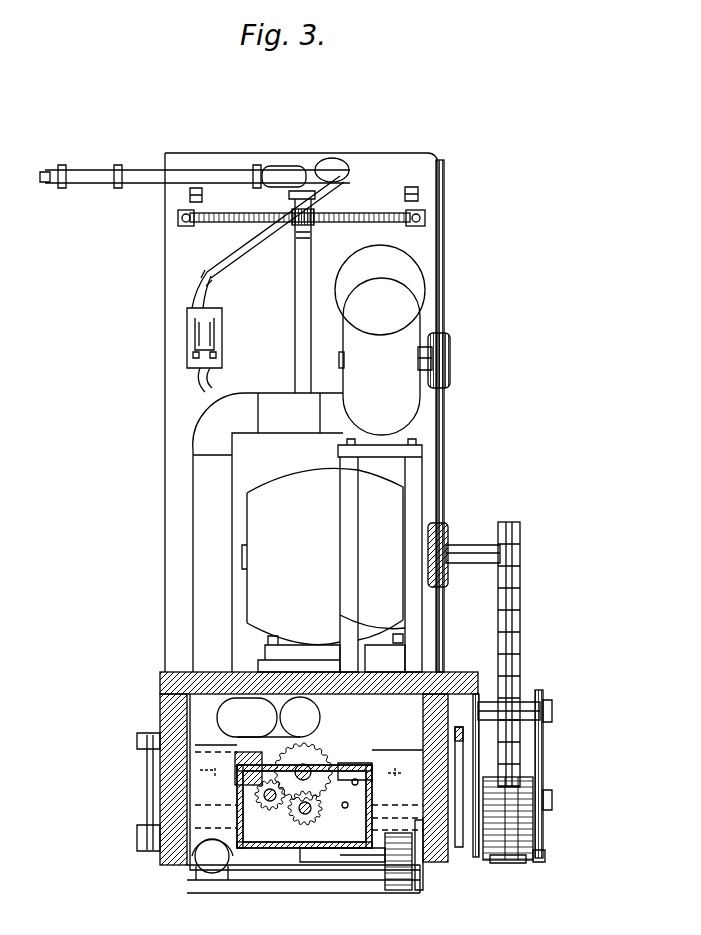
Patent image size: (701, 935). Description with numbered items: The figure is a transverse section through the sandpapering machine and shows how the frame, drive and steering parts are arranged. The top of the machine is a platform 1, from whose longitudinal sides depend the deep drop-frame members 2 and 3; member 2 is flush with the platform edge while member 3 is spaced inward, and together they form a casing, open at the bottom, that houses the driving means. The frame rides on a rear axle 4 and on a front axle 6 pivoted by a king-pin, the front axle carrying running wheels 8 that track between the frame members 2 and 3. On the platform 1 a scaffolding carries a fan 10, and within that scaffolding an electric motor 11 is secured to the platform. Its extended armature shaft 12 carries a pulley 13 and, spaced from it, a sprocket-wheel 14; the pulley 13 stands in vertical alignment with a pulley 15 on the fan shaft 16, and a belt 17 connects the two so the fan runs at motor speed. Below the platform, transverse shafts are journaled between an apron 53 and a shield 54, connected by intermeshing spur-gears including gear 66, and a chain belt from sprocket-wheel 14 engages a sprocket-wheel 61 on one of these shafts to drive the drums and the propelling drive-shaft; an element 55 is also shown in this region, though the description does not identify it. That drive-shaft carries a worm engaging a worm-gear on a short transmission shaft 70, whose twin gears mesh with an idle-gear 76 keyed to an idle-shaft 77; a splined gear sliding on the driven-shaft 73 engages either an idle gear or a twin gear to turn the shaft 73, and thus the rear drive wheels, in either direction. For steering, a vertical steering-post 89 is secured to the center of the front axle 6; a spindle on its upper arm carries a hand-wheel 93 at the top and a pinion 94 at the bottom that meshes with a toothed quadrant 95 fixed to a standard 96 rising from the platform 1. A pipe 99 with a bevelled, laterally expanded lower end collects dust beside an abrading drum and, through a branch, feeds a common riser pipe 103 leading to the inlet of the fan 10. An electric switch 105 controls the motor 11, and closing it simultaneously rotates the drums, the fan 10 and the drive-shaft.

The platform 1 is at (452, 672).
The longitudinal drop-frame member 2 is at (165, 712).
The longitudinal drop-frame member 3 is at (477, 858).
The rear axle 4 is at (298, 777).
The front axle 6 is at (362, 860).
The running wheels 8 is at (413, 893).
The fan 10 is at (380, 340).
The electric motor 11 is at (273, 512).
The armature shaft 12 is at (470, 546).
The pulley 13 is at (445, 525).
The sprocket-wheel 14 is at (522, 548).
The pulley 15 is at (452, 360).
The shaft 16 is at (434, 336).
The belt 17 is at (441, 428).
The apron 53 is at (505, 862).
The shield 54 is at (545, 748).
The arm 55 is at (522, 704).
The sprocket-wheel 61 is at (512, 792).
The spur-gear 66 is at (548, 858).
The transmission shaft 70 is at (332, 750).
The driven-shaft 73 is at (303, 830).
The idle-gear 76 is at (263, 810).
The idle-shaft 77 is at (262, 782).
The steering-post 89 is at (300, 305).
The hand-wheel 93 is at (345, 172).
The pinion 94 is at (316, 222).
The toothed quadrant 95 is at (355, 218).
The standard 96 is at (95, 186).
The pipe 99 is at (198, 868).
The riser pipe 103 is at (208, 565).
The electric switch 105 is at (222, 342).